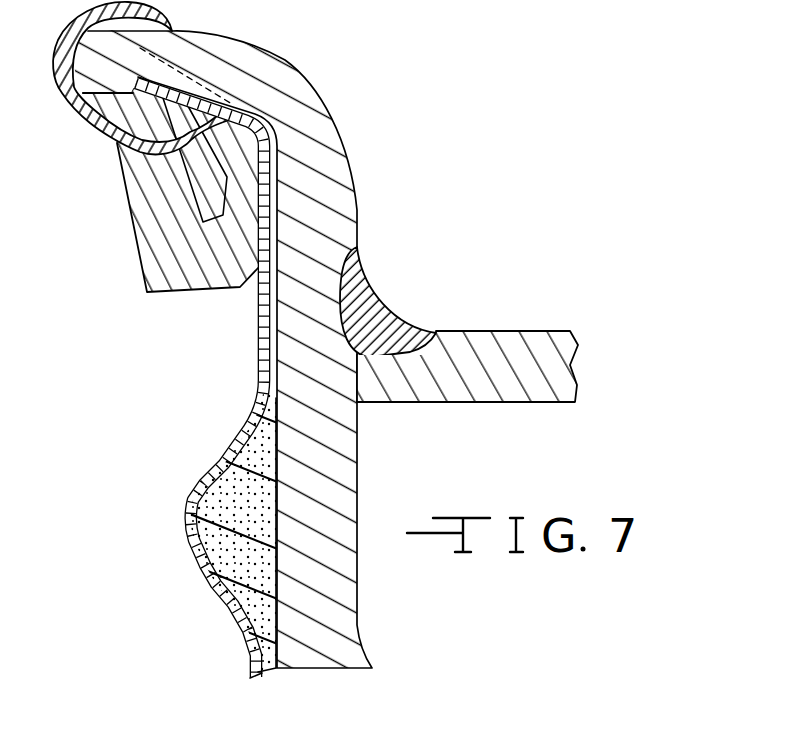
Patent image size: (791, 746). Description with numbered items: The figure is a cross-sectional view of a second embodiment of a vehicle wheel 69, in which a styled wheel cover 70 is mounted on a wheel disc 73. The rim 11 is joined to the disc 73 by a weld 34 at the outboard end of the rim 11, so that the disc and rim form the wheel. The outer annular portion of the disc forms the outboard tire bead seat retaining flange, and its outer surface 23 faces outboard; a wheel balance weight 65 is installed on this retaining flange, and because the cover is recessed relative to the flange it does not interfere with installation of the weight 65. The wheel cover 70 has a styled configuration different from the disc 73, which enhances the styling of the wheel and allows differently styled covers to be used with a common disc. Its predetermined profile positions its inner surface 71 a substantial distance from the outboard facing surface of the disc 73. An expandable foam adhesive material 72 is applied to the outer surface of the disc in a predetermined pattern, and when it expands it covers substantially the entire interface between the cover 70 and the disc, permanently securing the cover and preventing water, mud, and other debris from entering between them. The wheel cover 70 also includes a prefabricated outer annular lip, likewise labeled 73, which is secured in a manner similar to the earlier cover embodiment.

The rim 11 is at (519, 322).
The outer surface 23 is at (244, 654).
The weld 34 is at (388, 302).
The wheel balance weight 65 is at (134, 244).
The vehicle wheel 69 is at (332, 95).
The wheel cover 70 is at (194, 576).
The inner surface 71 is at (186, 503).
The expandable foam adhesive material 72 is at (212, 478).
The wheel disc 73 is at (173, 148).